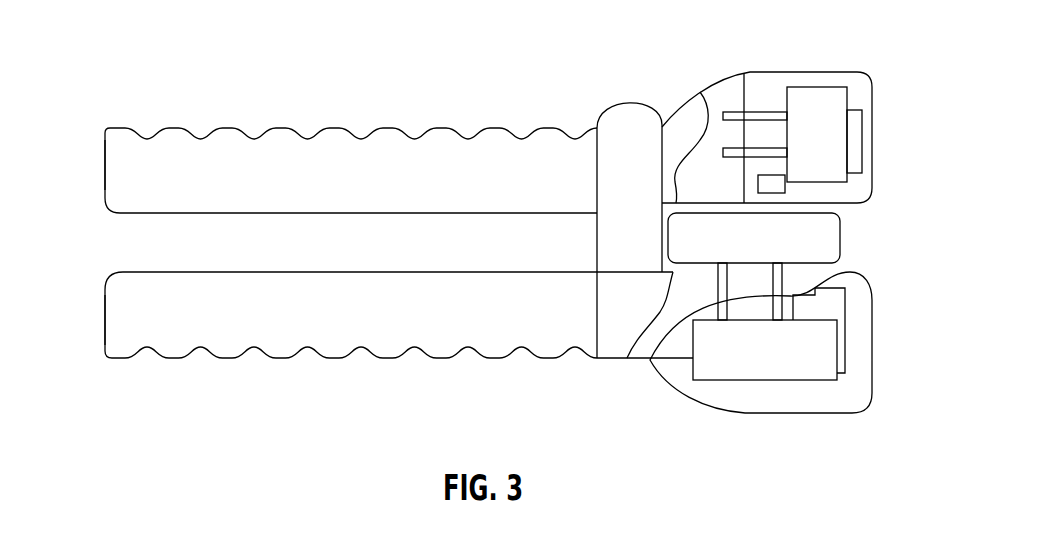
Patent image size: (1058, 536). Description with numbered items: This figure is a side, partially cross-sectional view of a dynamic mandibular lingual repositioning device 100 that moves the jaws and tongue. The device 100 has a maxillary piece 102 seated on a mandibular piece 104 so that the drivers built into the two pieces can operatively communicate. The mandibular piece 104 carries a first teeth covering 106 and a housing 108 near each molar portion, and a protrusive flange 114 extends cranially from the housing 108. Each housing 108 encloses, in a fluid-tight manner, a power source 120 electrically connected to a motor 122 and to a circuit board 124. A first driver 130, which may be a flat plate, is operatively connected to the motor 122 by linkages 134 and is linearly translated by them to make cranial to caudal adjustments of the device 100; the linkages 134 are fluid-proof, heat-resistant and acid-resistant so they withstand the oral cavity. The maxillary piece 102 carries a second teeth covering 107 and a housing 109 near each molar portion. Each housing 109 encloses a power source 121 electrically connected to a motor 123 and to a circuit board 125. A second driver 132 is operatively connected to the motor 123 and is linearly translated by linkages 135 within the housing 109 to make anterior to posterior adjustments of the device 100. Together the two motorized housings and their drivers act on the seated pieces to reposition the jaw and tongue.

The mandibular lingual repositioning device 100 is at (236, 58).
The maxillary piece 102 is at (388, 126).
The mandibular piece 104 is at (388, 359).
The first teeth covering 106 is at (104, 323).
The second teeth covering 107 is at (103, 163).
The housing 108 is at (823, 414).
The housing 109 is at (810, 72).
The protrusive flange 114 is at (612, 112).
The power source 120 is at (845, 307).
The power source 121 is at (857, 100).
The motor 122 is at (725, 382).
The motor 123 is at (787, 100).
The circuit board 124 is at (805, 292).
The circuit board 125 is at (788, 183).
The first driver 130 is at (782, 252).
The second driver 132 is at (685, 127).
The linkages 134 is at (718, 297).
The linkages 135 is at (738, 147).